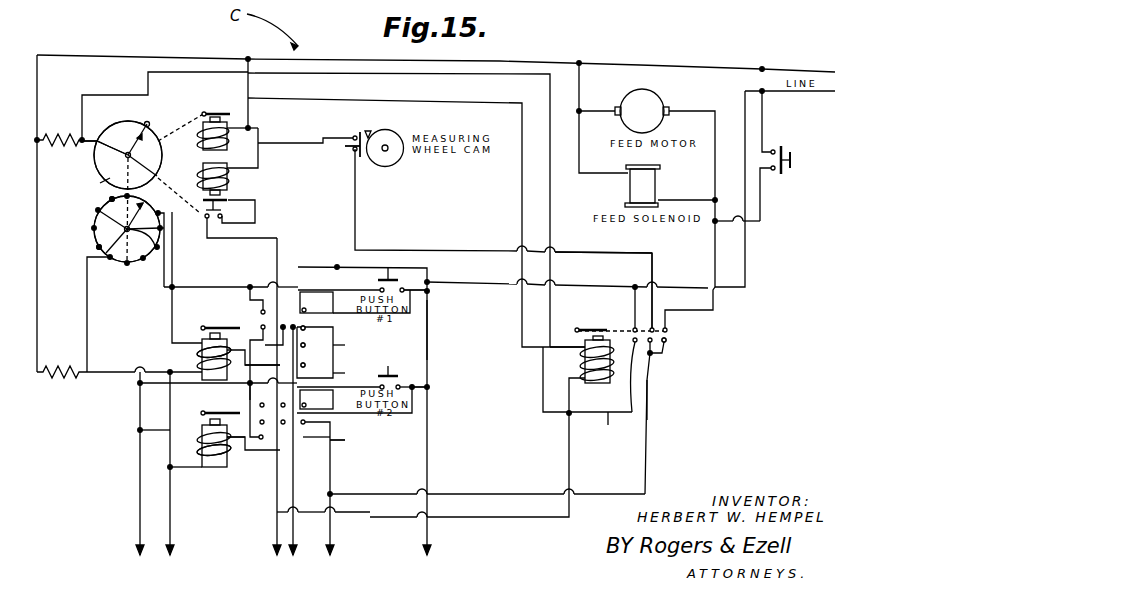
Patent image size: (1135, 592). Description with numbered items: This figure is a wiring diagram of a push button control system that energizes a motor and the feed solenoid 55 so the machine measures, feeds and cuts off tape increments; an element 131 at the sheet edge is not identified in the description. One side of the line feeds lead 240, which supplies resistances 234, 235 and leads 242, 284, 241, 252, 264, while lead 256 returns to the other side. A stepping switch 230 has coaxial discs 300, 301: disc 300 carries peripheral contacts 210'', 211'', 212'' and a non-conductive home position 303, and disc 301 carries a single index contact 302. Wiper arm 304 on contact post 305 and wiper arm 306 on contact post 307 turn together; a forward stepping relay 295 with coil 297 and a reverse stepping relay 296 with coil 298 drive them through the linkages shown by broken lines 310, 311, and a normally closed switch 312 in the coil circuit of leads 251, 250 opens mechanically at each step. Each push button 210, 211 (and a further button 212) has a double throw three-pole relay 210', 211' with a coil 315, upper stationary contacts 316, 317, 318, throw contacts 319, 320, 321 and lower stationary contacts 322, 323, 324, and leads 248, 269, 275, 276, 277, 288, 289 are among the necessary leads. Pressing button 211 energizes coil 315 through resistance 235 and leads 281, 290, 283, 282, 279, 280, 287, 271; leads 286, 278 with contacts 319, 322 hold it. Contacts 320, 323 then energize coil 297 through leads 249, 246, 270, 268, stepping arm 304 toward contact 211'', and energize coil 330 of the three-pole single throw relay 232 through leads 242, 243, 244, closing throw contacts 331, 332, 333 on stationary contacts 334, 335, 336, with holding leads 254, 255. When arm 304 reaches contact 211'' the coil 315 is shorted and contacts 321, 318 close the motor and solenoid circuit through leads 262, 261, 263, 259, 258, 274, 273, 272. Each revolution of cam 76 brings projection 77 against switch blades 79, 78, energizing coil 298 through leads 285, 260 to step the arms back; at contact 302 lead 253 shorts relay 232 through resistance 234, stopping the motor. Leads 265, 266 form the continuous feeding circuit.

The lead 131 is at (520, 0).
The lead 240 is at (131, 54).
The lead 242 is at (131, 93).
The lead 253 is at (305, 78).
The resistance 234 is at (66, 136).
The resistance 235 is at (68, 362).
The lead 284 is at (130, 126).
The stepping switch 230 is at (98, 188).
The disc 301 is at (94, 165).
The disc 300 is at (93, 228).
The wiper arm 306 is at (132, 127).
The broken line 311 is at (181, 158).
The index contact 302 is at (147, 121).
The index position 303 is at (151, 181).
The contact post 307 is at (100, 183).
The peripheral contact 210'' is at (156, 215).
The peripheral contact 212'' is at (132, 253).
The peripheral contact 211'' is at (140, 241).
The wiper arm 304 is at (111, 200).
The contact post 305 is at (98, 246).
The lead 241 is at (90, 314).
The lead 250 is at (265, 223).
The coil 298 is at (239, 128).
The reverse stepping relay 296 is at (200, 148).
The coil 297 is at (197, 177).
The lead 251 is at (254, 175).
The lead 252 is at (254, 120).
The lead 285 is at (312, 144).
The switch 312 is at (262, 210).
The broken line 310 is at (228, 228).
The forward stepping relay 295 is at (187, 277).
The switch blade 79 is at (353, 134).
The cam wheel 76 is at (397, 133).
The projection 77 is at (372, 131).
The switch blade 78 is at (358, 152).
The lead 262 is at (616, 96).
The lead 264 is at (566, 194).
The feed solenoid 55 is at (629, 188).
The lead 261 is at (715, 165).
The lead 263 is at (668, 206).
The lead 265 is at (760, 226).
The lead 266 is at (768, 130).
The push button 212 is at (790, 156).
The lead 268 is at (358, 250).
The lead 260 is at (600, 251).
The lead 256 is at (605, 284).
The lead 255 is at (634, 302).
The movable contact 332 is at (654, 300).
The three-pole single throw relay 232 is at (702, 338).
The movable contact 331 is at (634, 329).
The movable contact 333 is at (667, 331).
The lead 259 is at (664, 354).
The stationary contact 336 is at (667, 341).
The stationary contact 334 is at (622, 377).
The stationary contact 335 is at (647, 380).
The coil 330 is at (581, 359).
The lead 243 is at (572, 399).
The lead 254 is at (606, 414).
The lead 244 is at (571, 463).
The lead 258 is at (504, 490).
The push button 210 is at (368, 406).
The lead 272 is at (335, 283).
The upper stationary contact 318 is at (316, 350).
The lead 288 is at (388, 315).
The lead 289 is at (428, 292).
The movable contact 321 is at (310, 325).
The lead 269 is at (315, 337).
The movable contact 320 is at (315, 353).
The lower stationary contact 323 is at (315, 417).
The lower stationary contact 324 is at (334, 346).
The lead 273 is at (353, 372).
The lead 271 is at (430, 345).
The push button 211 is at (363, 372).
The lead 287 is at (428, 386).
The lead 286 is at (374, 415).
The lead 270 is at (316, 486).
The lead 274 is at (348, 468).
The lead 275 is at (173, 262).
The lead 276 is at (226, 287).
The lead 249 is at (275, 260).
The upper stationary contact 317 is at (283, 309).
The upper stationary contact 316 is at (261, 307).
The lead 277 is at (247, 318).
The double throw three-pole relay 210' is at (205, 344).
The coil 315 is at (201, 360).
The lower stationary contact 322 is at (253, 407).
The lead 248 is at (260, 370).
The movable contact 319 is at (270, 336).
The lead 290 is at (117, 373).
The lead 280 is at (194, 386).
The lead 278 is at (249, 393).
The lead 281 is at (108, 386).
The lead 279 is at (164, 285).
The lead 282 is at (138, 430).
The double throw three-pole relay 211' is at (227, 478).
The lead 283 is at (185, 468).
The lead 246 is at (253, 456).